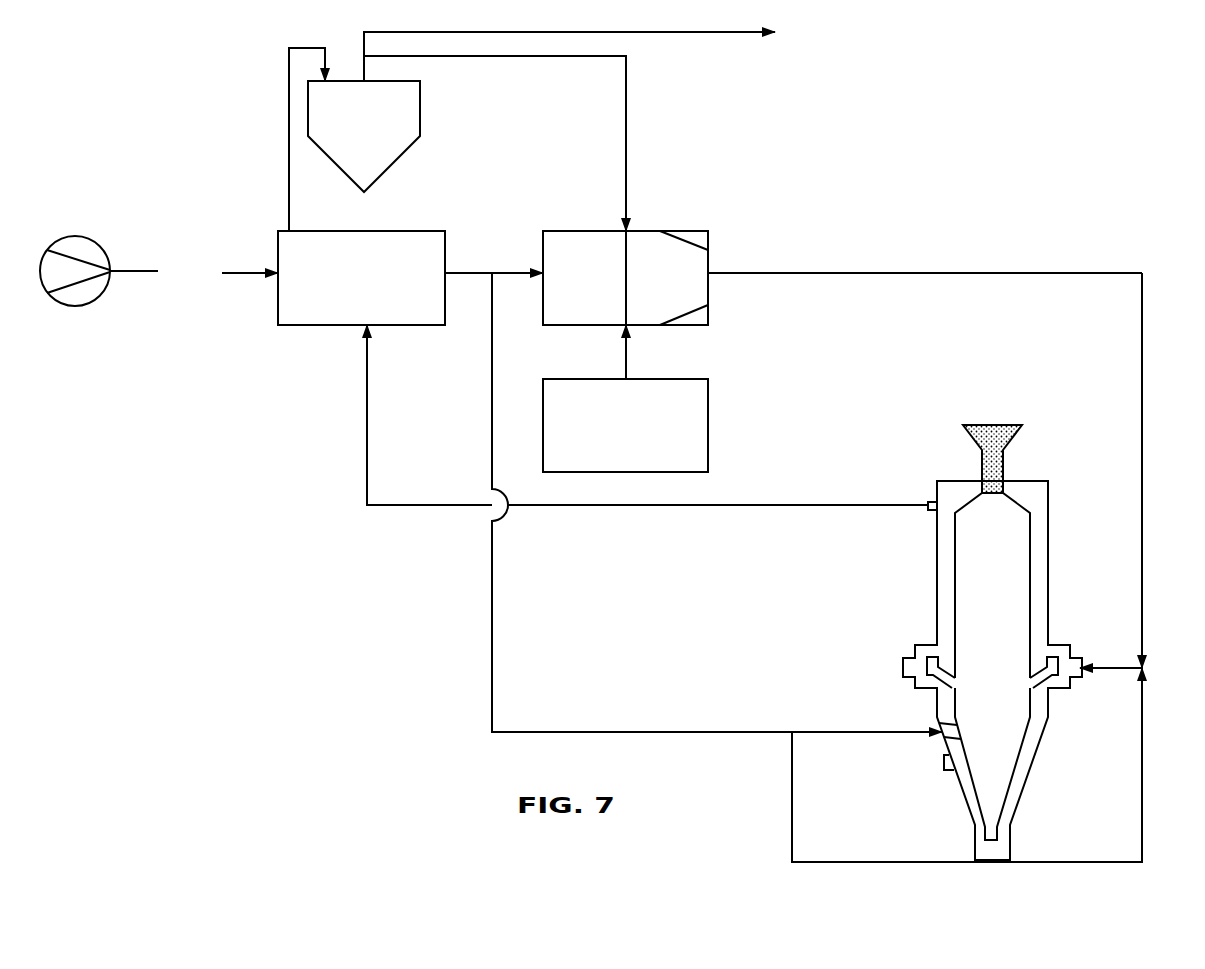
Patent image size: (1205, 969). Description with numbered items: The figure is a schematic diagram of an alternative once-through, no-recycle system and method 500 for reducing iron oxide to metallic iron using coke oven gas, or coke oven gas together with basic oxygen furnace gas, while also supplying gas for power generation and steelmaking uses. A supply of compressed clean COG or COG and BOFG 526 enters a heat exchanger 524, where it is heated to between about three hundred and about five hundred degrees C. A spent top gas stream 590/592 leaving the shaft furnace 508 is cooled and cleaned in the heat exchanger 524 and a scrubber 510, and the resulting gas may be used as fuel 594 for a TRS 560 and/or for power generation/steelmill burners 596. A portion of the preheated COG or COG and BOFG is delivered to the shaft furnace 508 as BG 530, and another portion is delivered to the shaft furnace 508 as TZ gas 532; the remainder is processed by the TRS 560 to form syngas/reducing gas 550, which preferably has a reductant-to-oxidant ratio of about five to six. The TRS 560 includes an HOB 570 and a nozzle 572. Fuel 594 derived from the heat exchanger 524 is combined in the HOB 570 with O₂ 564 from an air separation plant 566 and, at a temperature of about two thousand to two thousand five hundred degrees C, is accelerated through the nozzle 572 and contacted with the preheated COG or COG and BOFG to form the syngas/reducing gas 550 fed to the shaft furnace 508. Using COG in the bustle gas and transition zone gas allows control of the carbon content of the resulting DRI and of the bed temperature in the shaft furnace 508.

The once through system and method 500 is at (156, 52).
The shaft furnace 508 is at (1023, 479).
The scrubber 510 is at (420, 118).
The heat exchanger 524 is at (445, 243).
The supply of compressed clean COG or COG and BOFG 526 is at (199, 226).
The BG 530 is at (1145, 698).
The TZ gas 532 is at (870, 734).
The syngas/reducing gas 550 is at (1142, 480).
The TRS 560 is at (684, 230).
The O₂ 564 is at (627, 362).
The air separation plant 566 is at (708, 406).
The HOB 570 is at (552, 229).
The nozzle 572 is at (710, 258).
The spent top gas stream 590 is at (733, 504).
The spent top gas stream 592 is at (287, 100).
The fuel 594 is at (628, 151).
The power generation/steelmill burners 596 is at (906, 78).